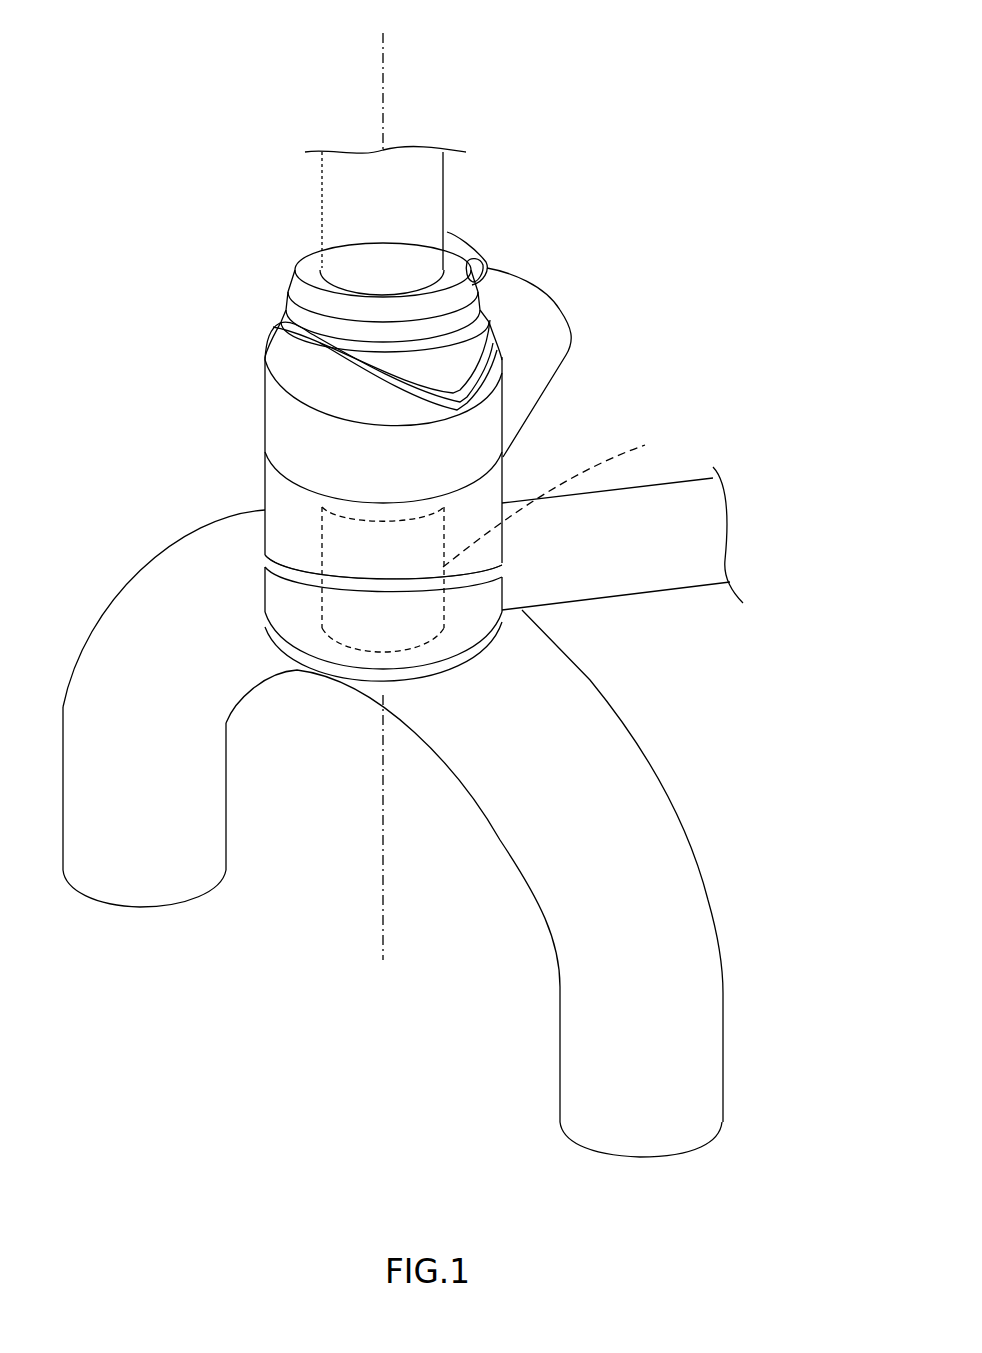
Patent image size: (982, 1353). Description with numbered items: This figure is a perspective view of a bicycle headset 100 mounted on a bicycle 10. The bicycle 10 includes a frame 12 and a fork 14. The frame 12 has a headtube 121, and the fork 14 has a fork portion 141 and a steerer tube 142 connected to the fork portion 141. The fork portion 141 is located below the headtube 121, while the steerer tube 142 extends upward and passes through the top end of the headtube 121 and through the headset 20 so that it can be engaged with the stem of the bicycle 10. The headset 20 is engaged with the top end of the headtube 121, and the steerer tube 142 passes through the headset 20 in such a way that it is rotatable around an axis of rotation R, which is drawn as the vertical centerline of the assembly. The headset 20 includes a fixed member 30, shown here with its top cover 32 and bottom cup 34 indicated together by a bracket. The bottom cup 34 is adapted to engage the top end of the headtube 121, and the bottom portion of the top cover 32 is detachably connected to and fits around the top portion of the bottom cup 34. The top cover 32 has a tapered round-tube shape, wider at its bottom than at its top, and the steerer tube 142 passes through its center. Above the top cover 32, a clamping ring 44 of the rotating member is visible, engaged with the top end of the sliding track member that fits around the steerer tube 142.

The bicycle headset 100 is at (660, 115).
The bicycle 10 is at (730, 415).
The frame 12 is at (700, 538).
The fork 14 is at (421, 833).
The fork portion 141 is at (550, 728).
The steerer tube 142 is at (423, 208).
The headtube 121 is at (267, 594).
The headset 20 is at (563, 285).
The fixed member 30 is at (300, 500).
The top cover 32 is at (263, 403).
The bottom cup 34 is at (303, 495).
The clamping ring 44 is at (297, 273).
The axis of rotation R is at (383, 80).